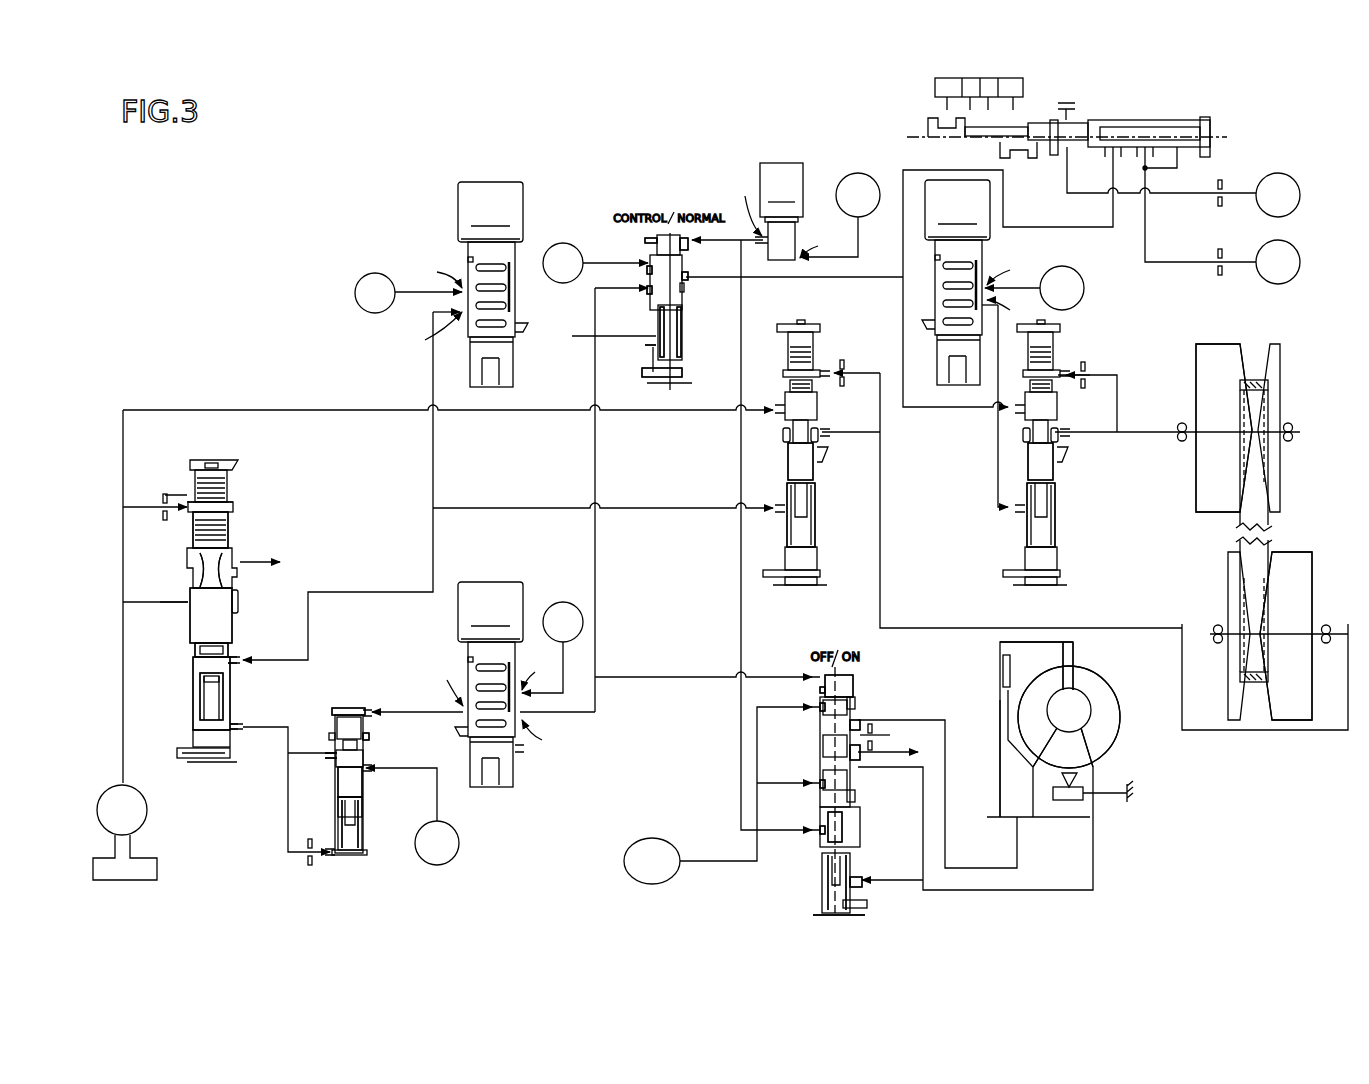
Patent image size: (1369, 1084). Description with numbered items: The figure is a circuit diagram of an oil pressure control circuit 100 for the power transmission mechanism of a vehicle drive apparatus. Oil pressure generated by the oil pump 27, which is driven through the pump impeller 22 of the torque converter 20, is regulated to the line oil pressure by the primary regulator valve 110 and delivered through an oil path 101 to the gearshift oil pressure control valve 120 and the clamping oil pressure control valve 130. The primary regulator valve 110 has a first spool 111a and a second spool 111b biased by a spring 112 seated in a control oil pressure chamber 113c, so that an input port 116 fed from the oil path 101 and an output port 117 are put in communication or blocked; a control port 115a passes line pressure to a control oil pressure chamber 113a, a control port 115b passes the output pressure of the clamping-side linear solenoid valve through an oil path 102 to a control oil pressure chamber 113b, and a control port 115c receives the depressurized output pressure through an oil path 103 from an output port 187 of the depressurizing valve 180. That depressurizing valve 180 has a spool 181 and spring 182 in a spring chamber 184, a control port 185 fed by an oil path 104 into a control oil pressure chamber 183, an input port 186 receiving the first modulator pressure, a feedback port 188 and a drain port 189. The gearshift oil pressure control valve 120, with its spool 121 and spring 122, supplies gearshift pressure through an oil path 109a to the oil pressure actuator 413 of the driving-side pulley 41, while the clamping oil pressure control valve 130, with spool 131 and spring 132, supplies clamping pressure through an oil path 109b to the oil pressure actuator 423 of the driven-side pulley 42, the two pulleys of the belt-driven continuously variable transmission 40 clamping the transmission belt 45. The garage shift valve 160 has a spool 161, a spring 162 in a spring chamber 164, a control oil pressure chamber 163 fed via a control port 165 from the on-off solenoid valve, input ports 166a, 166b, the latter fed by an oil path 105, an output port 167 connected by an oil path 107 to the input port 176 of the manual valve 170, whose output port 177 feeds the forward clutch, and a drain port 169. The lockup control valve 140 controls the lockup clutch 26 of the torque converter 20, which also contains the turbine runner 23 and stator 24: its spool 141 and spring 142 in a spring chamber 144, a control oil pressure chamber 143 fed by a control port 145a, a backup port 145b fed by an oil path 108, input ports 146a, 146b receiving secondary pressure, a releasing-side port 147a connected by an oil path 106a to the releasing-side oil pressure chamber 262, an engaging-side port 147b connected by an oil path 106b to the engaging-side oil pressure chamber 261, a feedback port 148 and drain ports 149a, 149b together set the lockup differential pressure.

The oil pressure control circuit 100 is at (309, 146).
The oil path 101 is at (338, 410).
The oil path 102 is at (345, 592).
The oil path 103 is at (288, 800).
The oil path 104 is at (435, 713).
The oil path 105 is at (597, 462).
The oil path 106a is at (945, 728).
The oil path 106b is at (1030, 890).
The oil path 107 is at (857, 277).
The oil path 108 is at (740, 600).
The oil path 109a is at (1138, 432).
The oil path 109b is at (975, 628).
The primary regulator valve 110 is at (198, 460).
The first spool 111a is at (232, 620).
The second spool 111b is at (193, 683).
The spring 112 is at (196, 716).
The control oil pressure chamber 113a is at (193, 530).
The control oil pressure chamber 113b is at (196, 654).
The control oil pressure chamber 113c is at (222, 692).
The control port 115a is at (188, 502).
The control port 115b is at (240, 657).
The control port 115c is at (240, 733).
The input port 116 is at (187, 605).
The output port 117 is at (238, 550).
The gearshift oil pressure control valve 120 is at (1062, 328).
The spool 121 is at (1053, 476).
The spring 122 is at (1058, 520).
The clamping oil pressure control valve 130 is at (818, 325).
The spool 131 is at (812, 476).
The spring 132 is at (818, 522).
The lockup control valve 140 is at (838, 768).
The spool 141 is at (848, 810).
The spring 142 is at (850, 830).
The control oil pressure chamber 143 is at (853, 676).
The spring chamber 144 is at (822, 840).
The control port 145a is at (820, 690).
The backup port 145b is at (820, 825).
The input port 146a is at (819, 708).
The input port 146b is at (819, 775).
The releasing-side port 147a is at (860, 704).
The engaging-side port 147b is at (858, 790).
The feedback port 148 is at (856, 875).
The drain port 149a is at (861, 722).
The drain port 149b is at (861, 767).
The garage shift valve 160 is at (670, 233).
The spool 161 is at (656, 318).
The spring 162 is at (683, 325).
The control oil pressure chamber 163 is at (652, 241).
The spring chamber 164 is at (681, 353).
The control port 165 is at (685, 249).
The input port 166a is at (650, 268).
The input port 166b is at (650, 292).
The output port 167 is at (686, 282).
The drain port 169 is at (651, 350).
The manual valve 170 is at (1212, 130).
The input port 176 is at (1110, 152).
The output port 177 is at (1140, 152).
The depressurizing valve 180 is at (343, 707).
The spool 181 is at (362, 783).
The spring 182 is at (362, 805).
The control oil pressure chamber 183 is at (364, 707).
The spring chamber 184 is at (340, 820).
The control port 185 is at (366, 712).
The input port 186 is at (366, 765).
The output port 187 is at (334, 762).
The feedback port 188 is at (332, 858).
The drain port 189 is at (368, 733).
The torque converter 20 is at (1140, 750).
The pump impeller 22 is at (1118, 688).
The turbine runner 23 is at (1075, 656).
The stator 24 is at (1100, 735).
The lockup clutch 26 is at (1002, 672).
The engaging-side oil pressure chamber 261 is at (1038, 642).
The releasing-side oil pressure chamber 262 is at (1000, 780).
The oil pump 27 is at (150, 810).
The belt-driven continuously variable transmission 40 is at (1282, 733).
The driving-side pulley 41 is at (1198, 340).
The oil pressure actuator 413 is at (1196, 360).
The driven-side pulley 42 is at (1225, 565).
The oil pressure actuator 423 is at (1310, 570).
The transmission belt 45 is at (1255, 380).